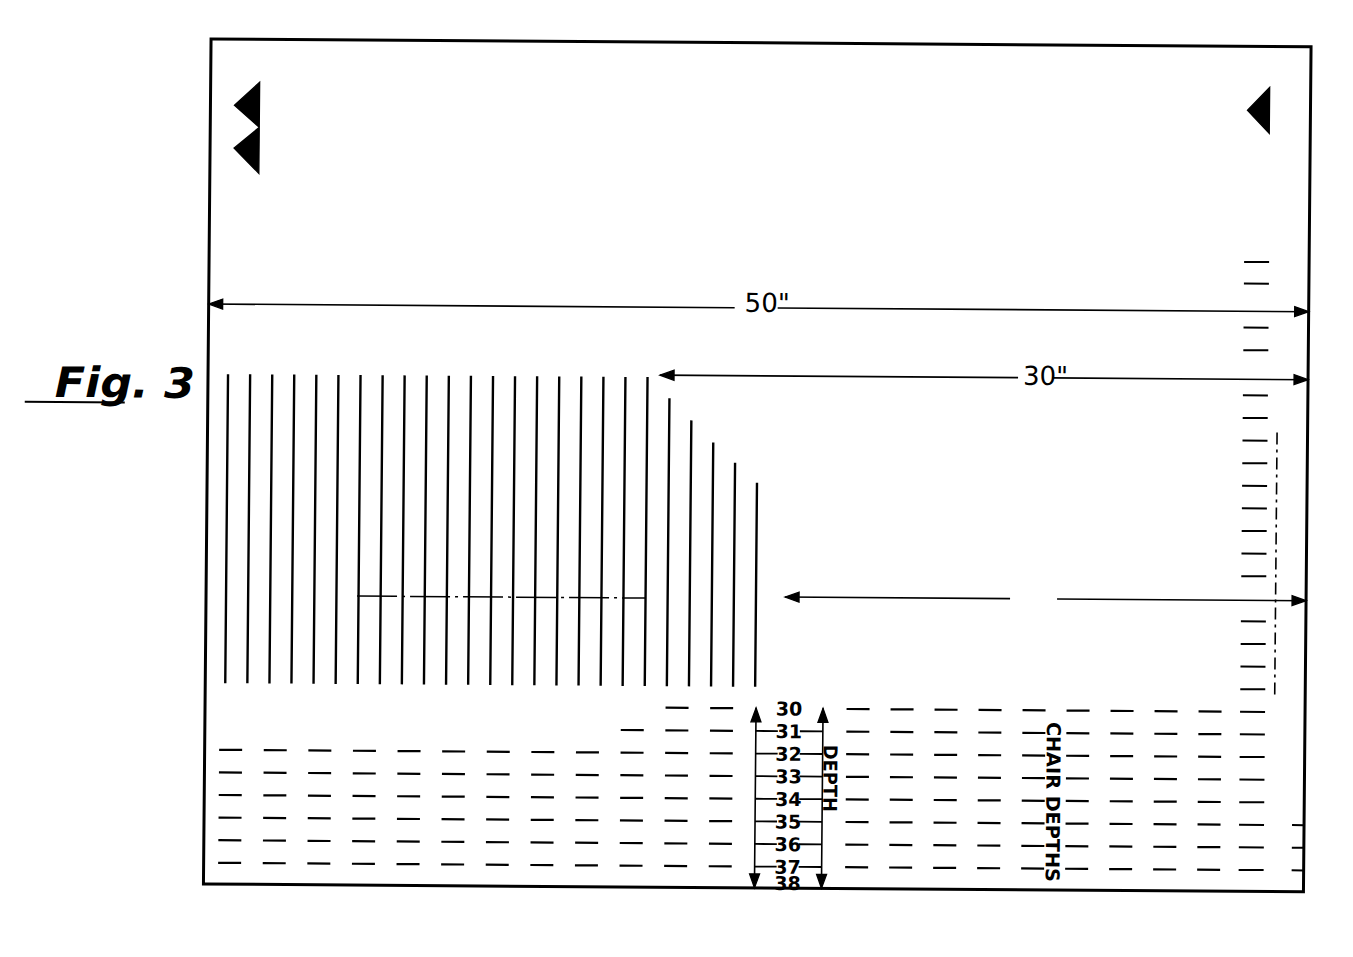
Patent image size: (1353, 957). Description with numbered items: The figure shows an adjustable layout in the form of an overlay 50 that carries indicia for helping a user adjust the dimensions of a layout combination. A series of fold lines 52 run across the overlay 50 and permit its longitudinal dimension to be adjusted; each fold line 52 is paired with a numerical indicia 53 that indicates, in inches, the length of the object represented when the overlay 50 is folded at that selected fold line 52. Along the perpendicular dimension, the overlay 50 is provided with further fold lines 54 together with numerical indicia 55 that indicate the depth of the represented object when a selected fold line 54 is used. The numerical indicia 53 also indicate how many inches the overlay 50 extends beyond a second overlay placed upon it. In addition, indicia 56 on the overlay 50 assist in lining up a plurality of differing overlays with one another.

The overlay 50 is at (700, 117).
The fold lines 52 is at (606, 374).
The numerical indicia 53 is at (354, 611).
The fold lines 54 is at (1244, 478).
The numerical indicia 55 is at (1273, 346).
The indicia 56 is at (261, 107).